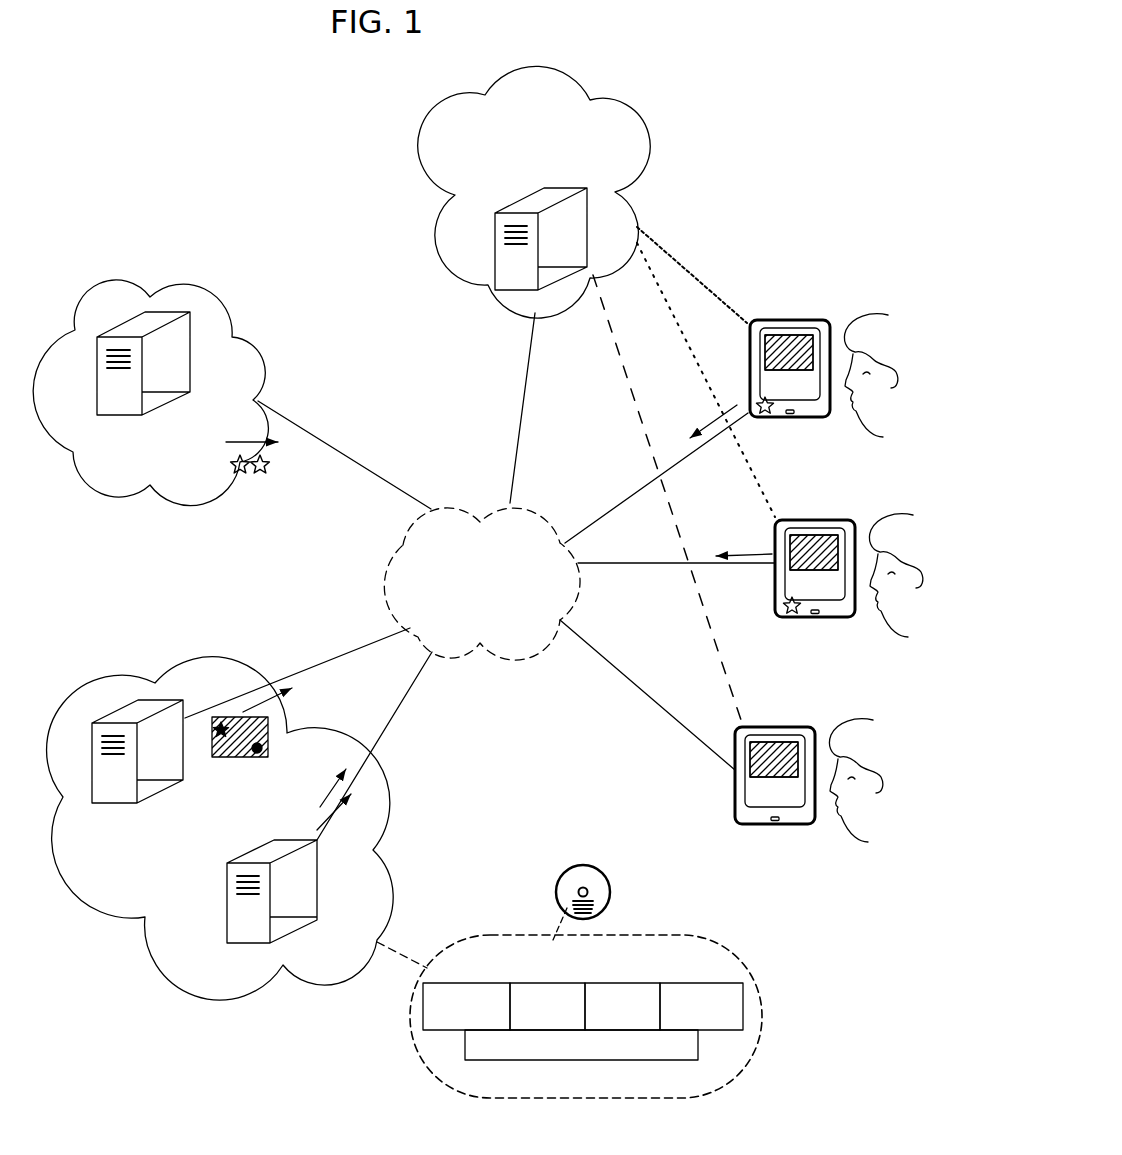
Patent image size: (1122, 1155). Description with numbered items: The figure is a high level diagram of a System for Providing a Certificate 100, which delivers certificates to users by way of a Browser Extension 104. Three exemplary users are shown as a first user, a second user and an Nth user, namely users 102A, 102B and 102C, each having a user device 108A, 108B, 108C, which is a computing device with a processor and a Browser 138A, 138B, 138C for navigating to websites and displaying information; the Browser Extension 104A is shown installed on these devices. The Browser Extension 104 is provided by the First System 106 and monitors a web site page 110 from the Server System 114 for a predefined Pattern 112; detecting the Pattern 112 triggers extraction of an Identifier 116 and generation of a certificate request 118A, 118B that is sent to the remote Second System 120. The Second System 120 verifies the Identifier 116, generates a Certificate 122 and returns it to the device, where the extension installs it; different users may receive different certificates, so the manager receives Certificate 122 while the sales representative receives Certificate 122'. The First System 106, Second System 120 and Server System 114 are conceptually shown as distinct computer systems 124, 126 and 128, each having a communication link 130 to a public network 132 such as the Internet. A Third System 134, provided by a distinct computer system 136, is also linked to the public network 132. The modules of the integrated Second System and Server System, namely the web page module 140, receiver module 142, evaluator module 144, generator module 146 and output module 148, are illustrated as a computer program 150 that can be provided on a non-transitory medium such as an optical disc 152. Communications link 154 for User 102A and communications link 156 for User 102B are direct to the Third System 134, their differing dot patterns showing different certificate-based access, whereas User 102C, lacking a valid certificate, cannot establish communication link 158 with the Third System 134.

The System for Providing a Certificate (SPC) 100 is at (716, 86).
The User 1 102A is at (888, 315).
The User 2 102B is at (913, 515).
The User N 102C is at (873, 720).
The Browser Extension 104 is at (228, 477).
The Browser Extension 104A is at (765, 414).
The First System 106 is at (126, 262).
The user device (UD) 108A is at (822, 320).
The user device (UD) 108B is at (846, 520).
The user device (UD) 108C is at (806, 727).
The web site page 110 is at (232, 757).
The predefined Pattern 112 is at (221, 722).
The Server System 114 is at (139, 664).
The Identifier 116 is at (257, 754).
The Certificate request (CSR) 118A is at (699, 414).
The Certificate request (CSR) 118B is at (740, 535).
The Second System 120 is at (320, 910).
The Certificate 122 is at (294, 747).
The Certificate 122' is at (345, 812).
The computer system 124 is at (143, 363).
The computer system 126 is at (137, 751).
The computer system 128 is at (272, 891).
The communication link 130 is at (480, 576).
The public network 132 is at (482, 584).
The Third System 134 is at (614, 112).
The computer system 136 is at (541, 239).
The Browser 138A is at (776, 335).
The Browser 138B is at (801, 535).
The Browser 138C is at (770, 742).
The web page module 140 is at (466, 986).
The receiver module 142 is at (538, 986).
The evaluator module 144 is at (610, 985).
The generator module 146 is at (683, 984).
The output module 148 is at (564, 1060).
The computer program 150 is at (606, 906).
The optical disc 152 is at (560, 889).
The communications link 154 is at (692, 275).
The communications link 156 is at (706, 380).
The communication link 158 is at (708, 628).